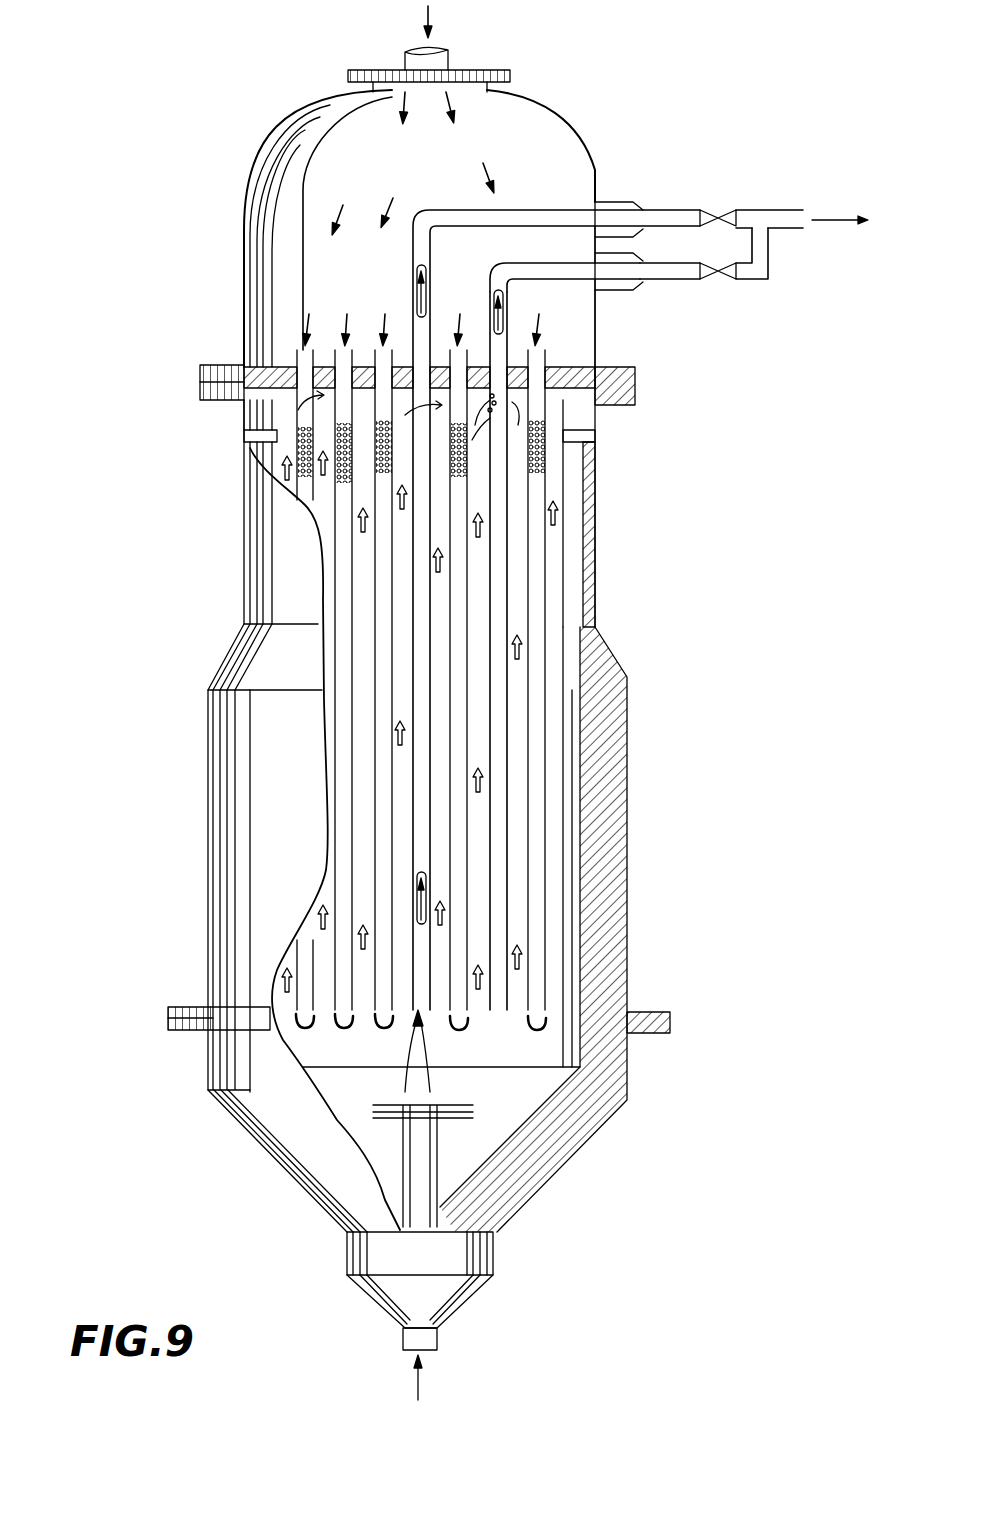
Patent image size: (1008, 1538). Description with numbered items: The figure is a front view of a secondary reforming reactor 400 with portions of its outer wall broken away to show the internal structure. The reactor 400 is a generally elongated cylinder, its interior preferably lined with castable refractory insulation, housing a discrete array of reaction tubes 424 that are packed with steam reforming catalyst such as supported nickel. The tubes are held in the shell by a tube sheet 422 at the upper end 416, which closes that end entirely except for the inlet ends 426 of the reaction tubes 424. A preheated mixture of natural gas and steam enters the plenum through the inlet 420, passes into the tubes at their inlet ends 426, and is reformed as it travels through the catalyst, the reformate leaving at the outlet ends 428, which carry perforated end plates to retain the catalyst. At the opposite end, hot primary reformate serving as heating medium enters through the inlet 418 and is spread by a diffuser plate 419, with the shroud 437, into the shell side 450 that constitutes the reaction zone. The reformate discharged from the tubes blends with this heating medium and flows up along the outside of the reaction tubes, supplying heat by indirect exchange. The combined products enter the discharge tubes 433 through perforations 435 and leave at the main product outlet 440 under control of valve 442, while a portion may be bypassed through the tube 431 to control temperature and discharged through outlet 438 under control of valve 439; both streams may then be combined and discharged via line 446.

The reactor 400 is at (606, 560).
The upper end 416 is at (576, 128).
The inlet 418 is at (424, 1393).
The diffuser plate 419 is at (446, 1104).
The inlet 420 is at (452, 66).
The tube sheet 422 is at (604, 364).
The reaction tubes 424 is at (537, 481).
The inlet ends 426 is at (537, 360).
The outlet ends 428 is at (545, 1018).
The tube 431 is at (514, 210).
The discharge tubes 433 is at (558, 262).
The perforations 435 is at (481, 340).
The shroud 437 is at (570, 625).
The outlet 438 is at (626, 200).
The valve 439 is at (718, 216).
The main product outlet 440 is at (680, 281).
The valve 442 is at (740, 281).
The line 446 is at (789, 212).
The shell side 450 is at (360, 566).